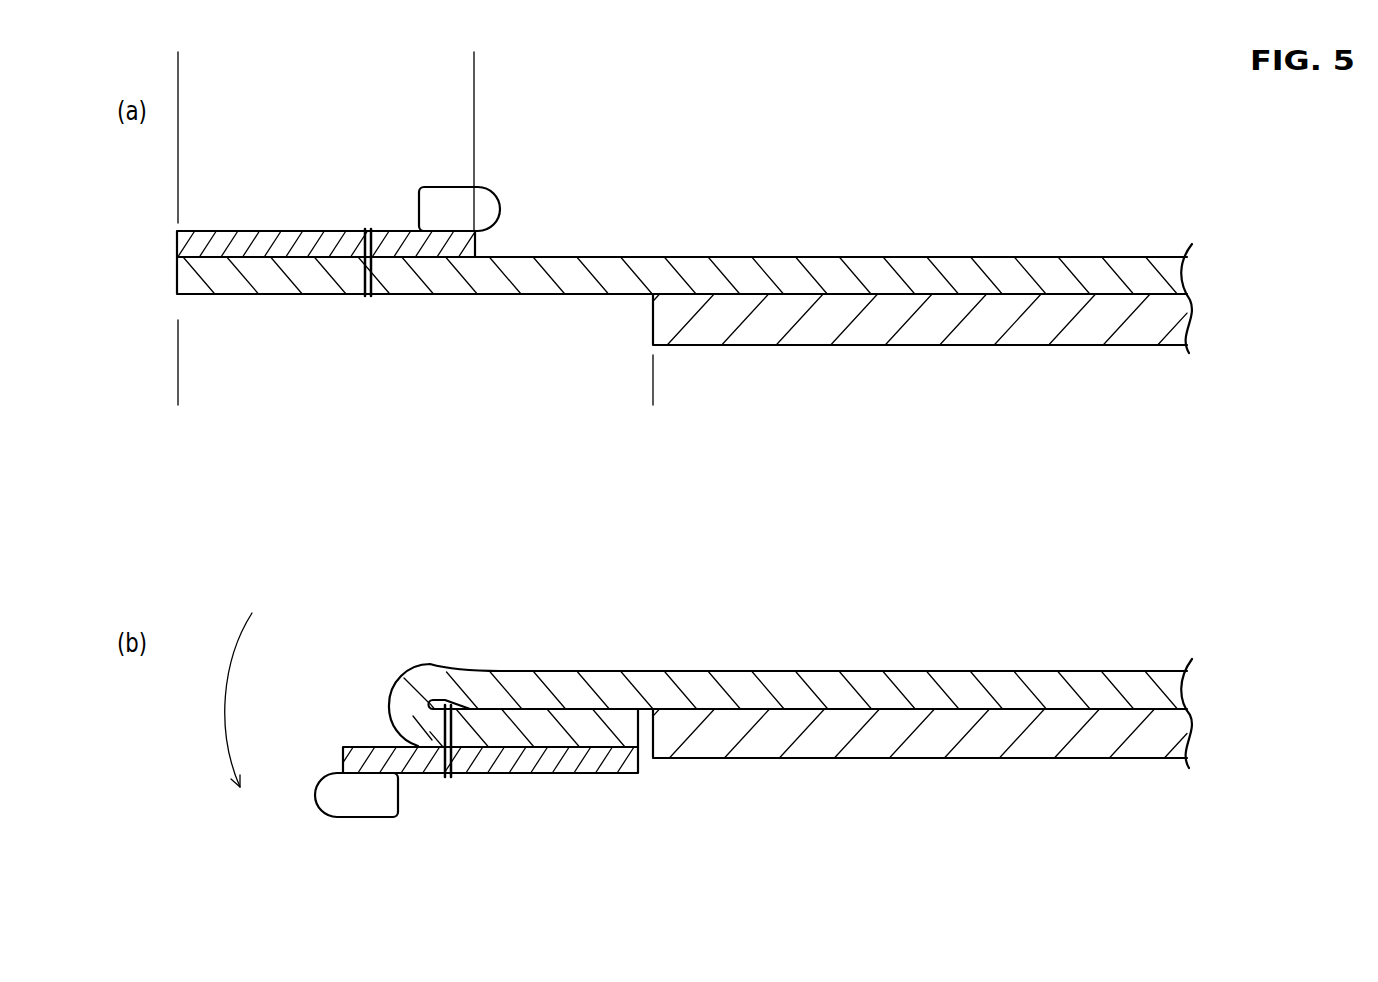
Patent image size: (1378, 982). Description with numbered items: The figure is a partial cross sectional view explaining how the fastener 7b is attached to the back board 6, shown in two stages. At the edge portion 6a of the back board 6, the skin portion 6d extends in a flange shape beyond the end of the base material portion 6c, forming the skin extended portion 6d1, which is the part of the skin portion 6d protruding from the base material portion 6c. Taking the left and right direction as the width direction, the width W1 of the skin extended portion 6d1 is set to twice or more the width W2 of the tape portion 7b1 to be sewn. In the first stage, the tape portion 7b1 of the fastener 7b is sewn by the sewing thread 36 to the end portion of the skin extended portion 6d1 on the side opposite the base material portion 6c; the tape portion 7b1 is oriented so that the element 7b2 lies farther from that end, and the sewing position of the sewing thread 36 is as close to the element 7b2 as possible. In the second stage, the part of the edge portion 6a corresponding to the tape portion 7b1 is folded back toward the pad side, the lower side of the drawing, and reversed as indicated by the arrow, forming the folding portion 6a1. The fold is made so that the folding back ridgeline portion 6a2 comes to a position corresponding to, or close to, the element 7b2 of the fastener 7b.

The back board 6 is at (987, 227).
The edge portion 6a is at (655, 182).
The folding portion 6a1 is at (638, 737).
The folding back ridgeline portion 6a2 is at (388, 707).
The base material portion 6c is at (1180, 317).
The skin portion 6d is at (860, 257).
The skin extended portion 6d1 is at (580, 257).
The fastener 7b is at (338, 190).
The tape portion 7b1 is at (277, 231).
The element 7b2 is at (460, 195).
The sewing thread 36 is at (362, 273).
The width of the skin extended portion W1 is at (178, 387).
The width of the tape portion W2 is at (461, 67).